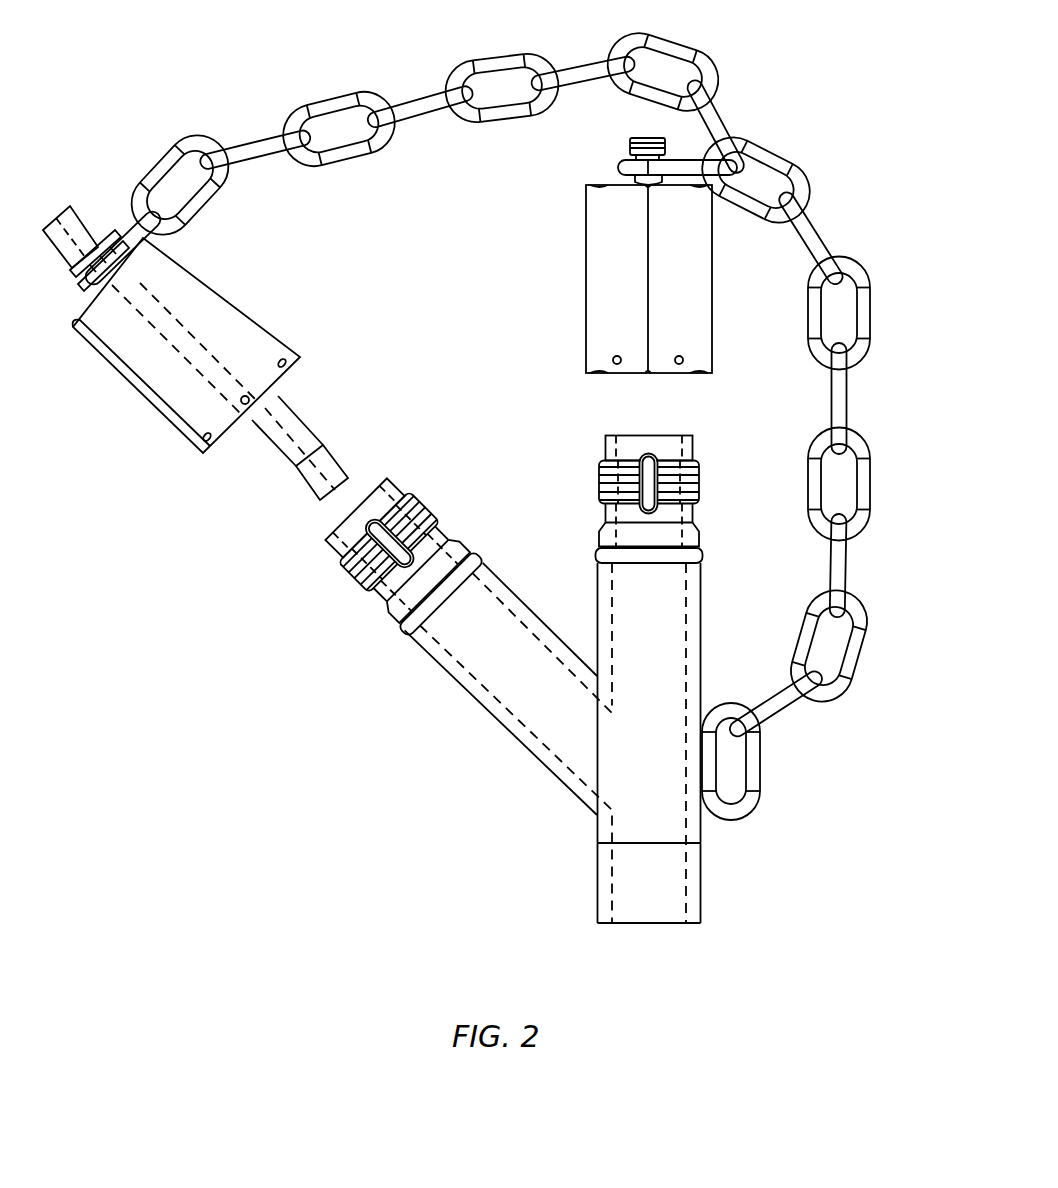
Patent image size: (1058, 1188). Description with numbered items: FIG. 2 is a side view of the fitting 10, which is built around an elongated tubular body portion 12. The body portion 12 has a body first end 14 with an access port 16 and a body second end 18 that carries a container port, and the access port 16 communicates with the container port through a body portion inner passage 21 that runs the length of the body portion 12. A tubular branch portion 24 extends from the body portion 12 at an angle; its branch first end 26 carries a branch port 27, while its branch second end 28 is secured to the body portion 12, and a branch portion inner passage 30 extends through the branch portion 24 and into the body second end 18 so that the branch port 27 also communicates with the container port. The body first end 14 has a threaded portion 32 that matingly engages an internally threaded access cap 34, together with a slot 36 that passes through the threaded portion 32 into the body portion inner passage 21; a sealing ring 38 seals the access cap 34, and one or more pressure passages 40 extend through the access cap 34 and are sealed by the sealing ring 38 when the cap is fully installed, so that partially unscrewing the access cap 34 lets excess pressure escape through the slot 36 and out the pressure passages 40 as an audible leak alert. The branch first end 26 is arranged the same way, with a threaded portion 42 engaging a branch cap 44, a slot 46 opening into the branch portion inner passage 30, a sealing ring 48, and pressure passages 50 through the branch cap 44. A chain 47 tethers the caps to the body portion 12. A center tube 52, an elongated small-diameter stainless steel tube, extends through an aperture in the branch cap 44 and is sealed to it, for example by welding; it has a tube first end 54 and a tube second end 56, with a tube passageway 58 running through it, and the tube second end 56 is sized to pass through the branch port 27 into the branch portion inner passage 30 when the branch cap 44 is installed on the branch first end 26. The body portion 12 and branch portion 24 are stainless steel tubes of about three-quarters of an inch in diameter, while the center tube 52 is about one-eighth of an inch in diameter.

The fitting 10 is at (190, 716).
The tubular body portion 12 is at (656, 684).
The body first end 14 is at (617, 500).
The access port 16 is at (649, 448).
The body second end 18 is at (649, 883).
The body portion inner passage 21 is at (684, 743).
The tubular branch portion 24 is at (464, 689).
The branch first end 26 is at (464, 630).
The branch port 27 is at (364, 517).
The branch second end 28 is at (501, 722).
The branch portion inner passage 30 is at (427, 687).
The threaded portion 32 is at (649, 482).
The access cap 34 is at (625, 255).
The slot 36 is at (649, 484).
The sealing ring 38 is at (649, 555).
The pressure passages 40 is at (679, 360).
The threaded portion 42 is at (388, 541).
The branch cap 44 is at (195, 353).
The slot 46 is at (389, 543).
The chain 47 is at (870, 322).
The sealing ring 48 is at (441, 594).
The pressure passages 50 is at (282, 363).
The center tube 52 is at (300, 448).
The tube first end 54 is at (103, 248).
The tube second end 56 is at (322, 472).
The tube passageway 58 is at (184, 348).